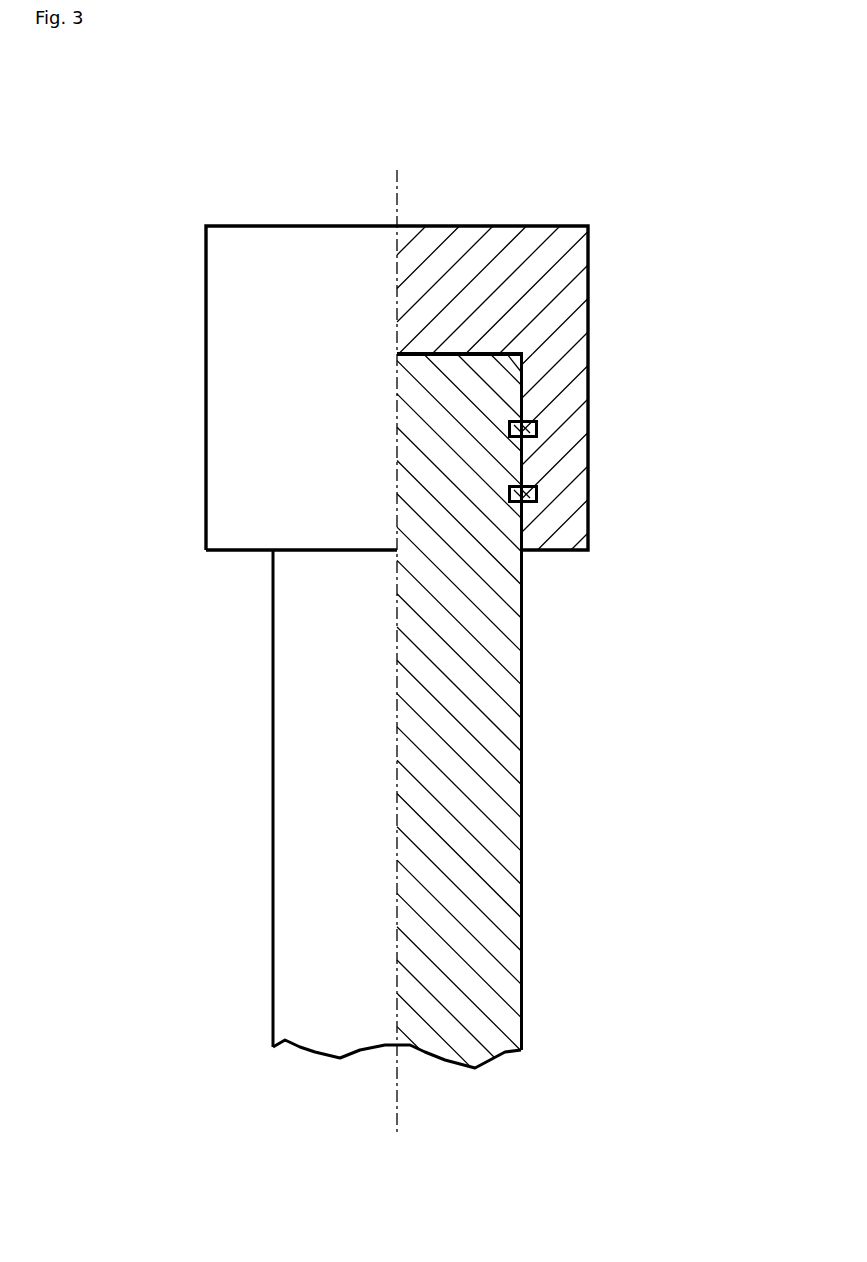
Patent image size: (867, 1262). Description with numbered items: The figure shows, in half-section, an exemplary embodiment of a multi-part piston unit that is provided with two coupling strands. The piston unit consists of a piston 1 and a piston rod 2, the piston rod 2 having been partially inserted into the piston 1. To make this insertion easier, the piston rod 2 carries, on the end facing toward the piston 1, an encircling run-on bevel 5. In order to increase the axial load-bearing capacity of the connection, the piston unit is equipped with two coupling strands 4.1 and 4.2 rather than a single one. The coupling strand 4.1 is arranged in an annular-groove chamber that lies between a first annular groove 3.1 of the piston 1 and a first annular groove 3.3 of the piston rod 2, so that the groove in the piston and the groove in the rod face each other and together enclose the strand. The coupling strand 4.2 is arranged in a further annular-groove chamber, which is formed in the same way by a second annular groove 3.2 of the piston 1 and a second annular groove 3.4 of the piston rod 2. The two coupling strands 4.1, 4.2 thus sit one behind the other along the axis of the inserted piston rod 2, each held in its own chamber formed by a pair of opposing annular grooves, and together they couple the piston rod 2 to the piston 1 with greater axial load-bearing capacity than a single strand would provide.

The piston 1 is at (565, 278).
The piston rod 2 is at (455, 763).
The run-on bevel 5 is at (526, 352).
The coupling strand 4.1 is at (539, 423).
The coupling strand 4.2 is at (538, 490).
The first annular groove of the piston 3.1 is at (540, 452).
The second annular groove of the piston 3.2 is at (539, 505).
The first annular groove of the piston rod 3.3 is at (508, 420).
The second annular groove of the piston rod 3.4 is at (508, 492).